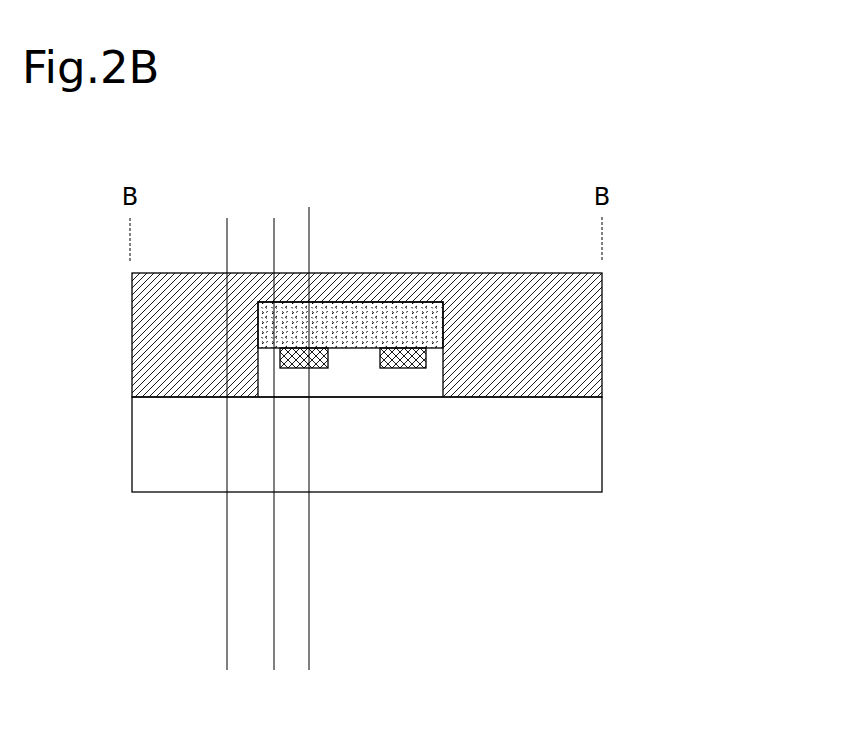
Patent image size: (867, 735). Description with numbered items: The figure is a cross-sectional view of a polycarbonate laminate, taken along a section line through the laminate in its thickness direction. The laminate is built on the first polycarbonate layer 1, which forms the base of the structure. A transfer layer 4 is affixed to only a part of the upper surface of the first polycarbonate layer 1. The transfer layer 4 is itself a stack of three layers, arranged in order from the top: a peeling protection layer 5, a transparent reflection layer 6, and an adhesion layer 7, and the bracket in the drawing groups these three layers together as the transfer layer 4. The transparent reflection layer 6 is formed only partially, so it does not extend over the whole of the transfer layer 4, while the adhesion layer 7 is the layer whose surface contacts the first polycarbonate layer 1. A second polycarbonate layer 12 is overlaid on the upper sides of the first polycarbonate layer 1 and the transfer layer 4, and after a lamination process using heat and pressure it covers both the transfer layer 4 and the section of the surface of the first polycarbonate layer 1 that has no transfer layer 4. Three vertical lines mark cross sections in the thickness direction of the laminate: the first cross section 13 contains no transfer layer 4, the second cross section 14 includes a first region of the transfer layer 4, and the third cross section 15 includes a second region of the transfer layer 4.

The first polycarbonate layer 1 is at (533, 479).
The transfer layer 4 is at (785, 190).
The peeling protection layer 5 is at (443, 312).
The transparent reflection layer 6 is at (427, 362).
The adhesion layer 7 is at (427, 385).
The second polycarbonate layer 12 is at (485, 273).
The first cross section 13 is at (226, 441).
The second cross section 14 is at (265, 424).
The third cross section 15 is at (310, 432).